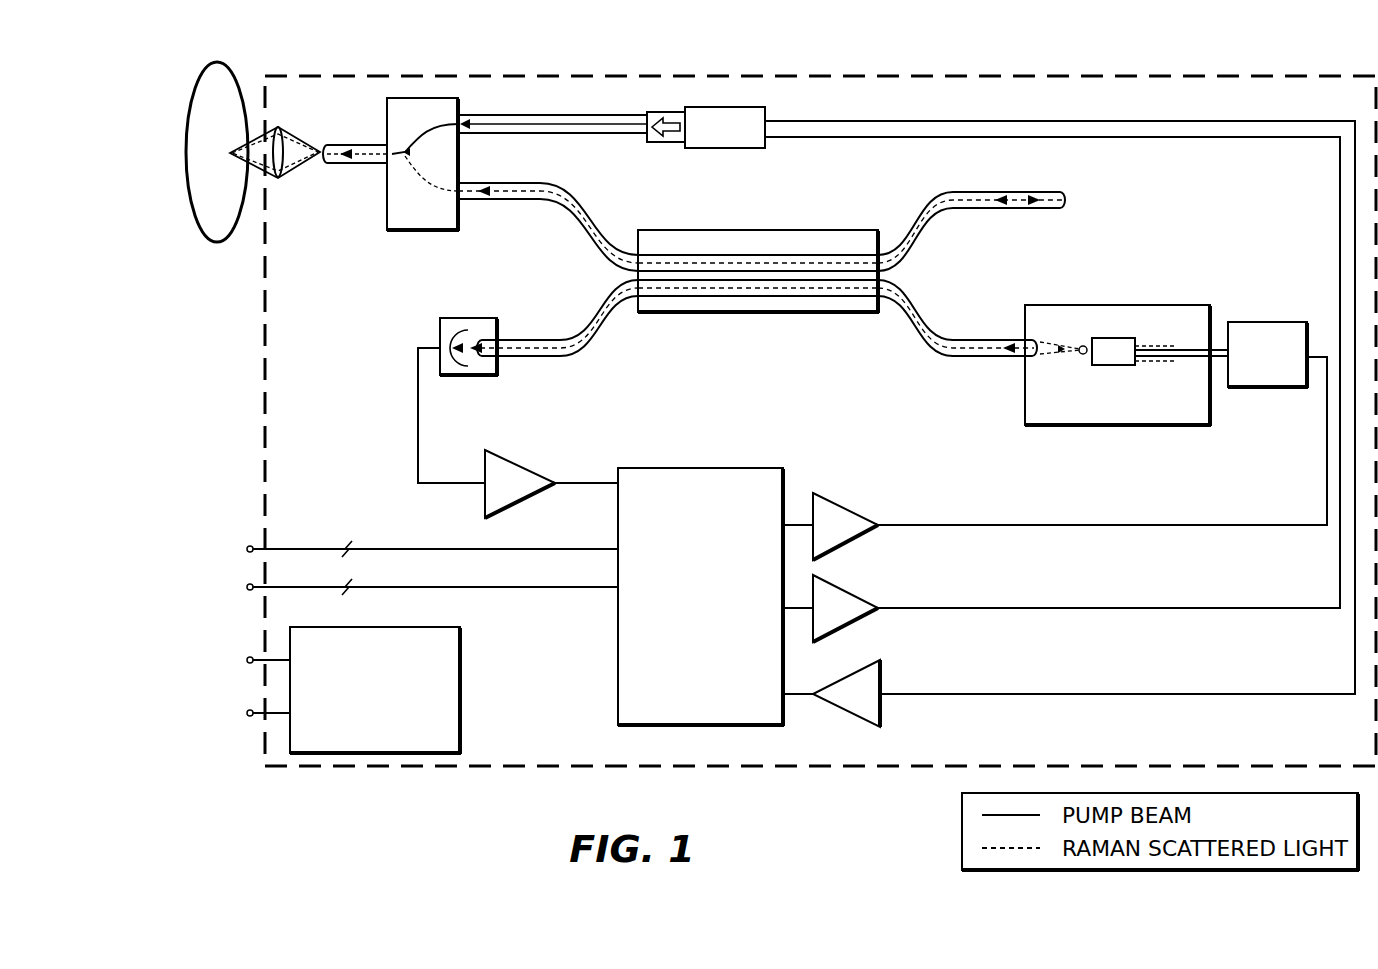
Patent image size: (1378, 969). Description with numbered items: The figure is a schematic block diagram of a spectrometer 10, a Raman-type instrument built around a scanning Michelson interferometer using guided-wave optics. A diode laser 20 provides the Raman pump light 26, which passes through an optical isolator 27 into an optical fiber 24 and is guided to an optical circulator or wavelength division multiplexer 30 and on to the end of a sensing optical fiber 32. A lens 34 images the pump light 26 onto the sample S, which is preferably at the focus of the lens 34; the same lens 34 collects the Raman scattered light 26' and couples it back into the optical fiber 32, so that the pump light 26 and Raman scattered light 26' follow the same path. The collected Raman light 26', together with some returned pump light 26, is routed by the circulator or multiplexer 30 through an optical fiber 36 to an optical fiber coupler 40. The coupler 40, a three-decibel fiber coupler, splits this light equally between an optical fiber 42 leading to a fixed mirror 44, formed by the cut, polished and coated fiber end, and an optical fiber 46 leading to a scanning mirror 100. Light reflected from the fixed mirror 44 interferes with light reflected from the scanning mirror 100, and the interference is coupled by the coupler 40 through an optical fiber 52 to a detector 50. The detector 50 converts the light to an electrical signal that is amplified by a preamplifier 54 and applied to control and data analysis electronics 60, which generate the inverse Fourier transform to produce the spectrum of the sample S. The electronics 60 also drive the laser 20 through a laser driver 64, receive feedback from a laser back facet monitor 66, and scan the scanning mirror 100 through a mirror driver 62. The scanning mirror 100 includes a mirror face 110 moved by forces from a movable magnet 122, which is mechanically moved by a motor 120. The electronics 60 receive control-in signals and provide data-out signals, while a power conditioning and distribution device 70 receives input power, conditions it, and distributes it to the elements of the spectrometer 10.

The spectrometer 10 is at (1247, 206).
The sample S is at (226, 64).
The laser 20 is at (772, 150).
The optical fiber 24 is at (534, 114).
The pump light 26 is at (553, 142).
The Raman scattered light 26' is at (548, 231).
The optical isolator 27 is at (647, 143).
The optical circulator or wavelength division multiplexer 30 is at (462, 158).
The sensing optical fiber 32 is at (358, 145).
The lens 34 is at (286, 141).
The optical fiber 36 is at (512, 202).
The optical fiber coupler 40 is at (706, 230).
The optical fiber 42 is at (957, 208).
The fixed mirror 44 is at (1068, 200).
The optical fiber 46 is at (923, 318).
The detector 50 is at (480, 318).
The optical fiber 52 is at (541, 358).
The preamplifier 54 is at (507, 455).
The control and data analysis electronics 60 is at (686, 666).
The mirror driver 62 is at (845, 508).
The laser driver 64 is at (842, 585).
The laser back facet monitor 66 is at (855, 717).
The power conditioning and distribution device 70 is at (463, 655).
The scanning mirror 100 is at (1125, 305).
The mirror face 110 is at (1085, 338).
The motor 120 is at (1252, 322).
The movable magnet 122 is at (1128, 374).